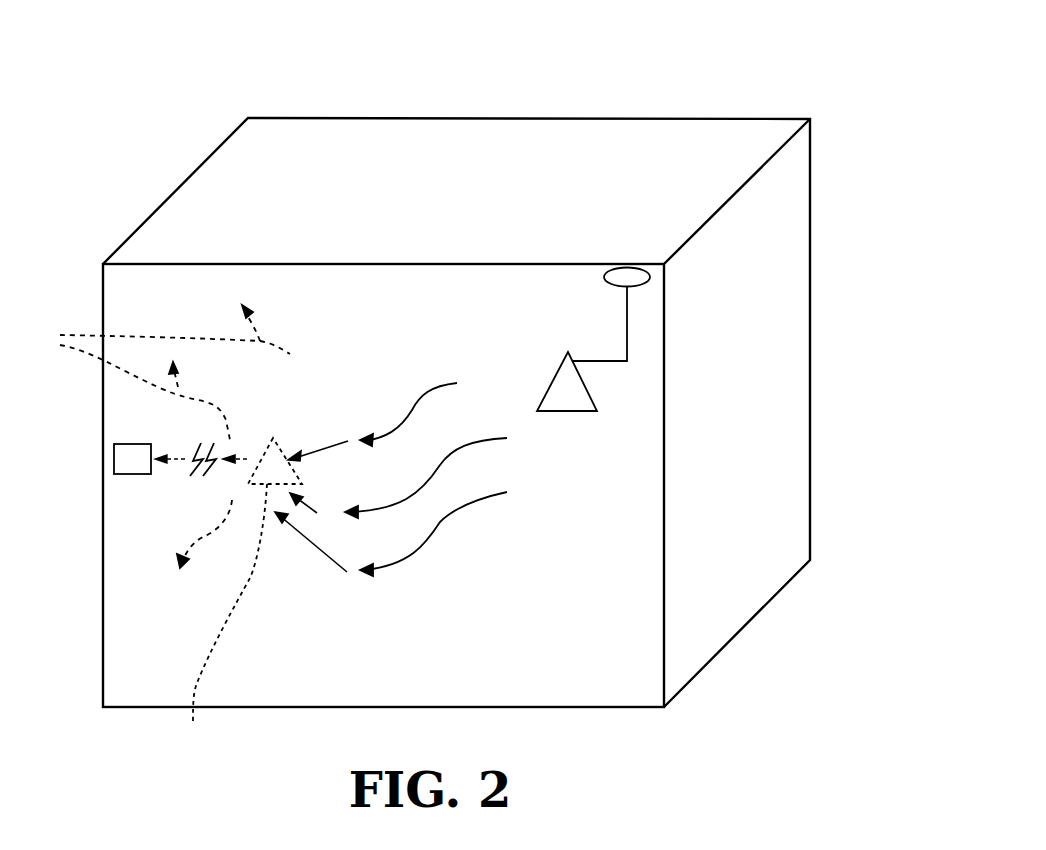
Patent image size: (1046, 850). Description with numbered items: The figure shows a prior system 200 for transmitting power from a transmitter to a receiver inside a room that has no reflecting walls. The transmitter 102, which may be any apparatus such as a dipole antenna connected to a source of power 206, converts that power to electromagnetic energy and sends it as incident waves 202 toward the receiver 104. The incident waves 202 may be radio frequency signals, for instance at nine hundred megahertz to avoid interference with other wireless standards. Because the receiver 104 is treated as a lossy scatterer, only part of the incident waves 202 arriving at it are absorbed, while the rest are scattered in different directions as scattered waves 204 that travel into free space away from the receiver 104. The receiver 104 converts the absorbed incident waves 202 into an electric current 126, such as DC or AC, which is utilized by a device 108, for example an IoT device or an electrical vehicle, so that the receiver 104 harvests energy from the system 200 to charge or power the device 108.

The system 200 is at (852, 77).
The source of power 206 is at (618, 278).
The transmitter 102 is at (582, 405).
The receiver 104 is at (259, 574).
The device 108 is at (125, 462).
The electric current 126 is at (195, 468).
The scattered waves 204 is at (153, 436).
The incident waves 202 is at (453, 450).